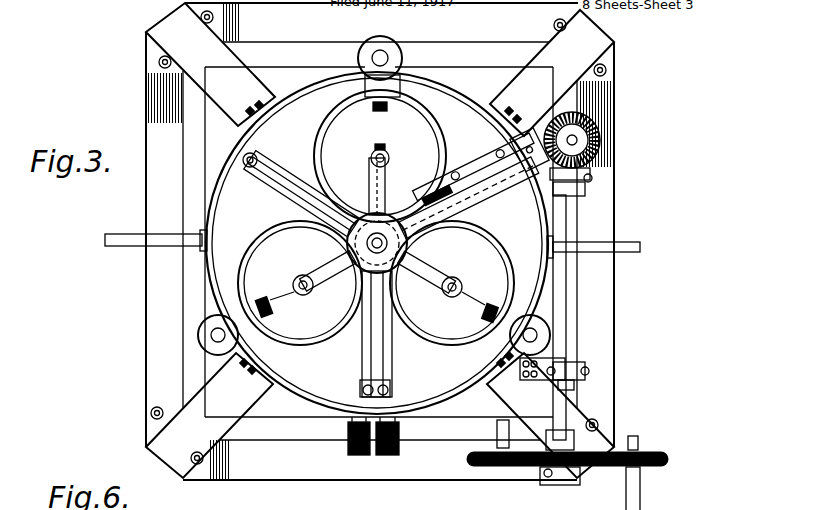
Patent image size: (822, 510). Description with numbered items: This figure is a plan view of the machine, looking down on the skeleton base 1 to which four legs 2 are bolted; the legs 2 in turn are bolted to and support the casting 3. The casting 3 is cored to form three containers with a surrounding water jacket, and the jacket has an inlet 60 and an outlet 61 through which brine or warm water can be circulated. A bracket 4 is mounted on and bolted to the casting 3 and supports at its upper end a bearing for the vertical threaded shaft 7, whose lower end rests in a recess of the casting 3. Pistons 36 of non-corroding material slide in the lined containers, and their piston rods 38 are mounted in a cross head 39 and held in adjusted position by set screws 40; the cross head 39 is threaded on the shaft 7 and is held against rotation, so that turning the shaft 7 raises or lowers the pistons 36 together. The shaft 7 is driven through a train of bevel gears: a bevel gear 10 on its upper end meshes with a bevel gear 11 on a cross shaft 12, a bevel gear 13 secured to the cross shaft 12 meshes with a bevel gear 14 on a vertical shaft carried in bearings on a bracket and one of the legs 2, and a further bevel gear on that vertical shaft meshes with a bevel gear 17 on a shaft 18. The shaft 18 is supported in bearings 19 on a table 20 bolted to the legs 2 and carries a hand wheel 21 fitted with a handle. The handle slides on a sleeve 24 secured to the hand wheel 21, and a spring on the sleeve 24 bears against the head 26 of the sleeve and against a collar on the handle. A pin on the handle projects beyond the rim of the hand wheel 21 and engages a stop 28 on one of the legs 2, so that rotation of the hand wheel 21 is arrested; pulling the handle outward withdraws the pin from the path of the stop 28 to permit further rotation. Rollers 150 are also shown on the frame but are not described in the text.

The base 1 is at (380, 241).
The legs 2 is at (380, 240).
The casting 3 is at (377, 243).
The bracket 4 is at (290, 173).
The vertical threaded shaft 7 is at (378, 242).
The bevel gear 10 is at (358, 268).
The bevel gear 11 is at (412, 238).
The cross shaft 12 is at (497, 180).
The bevel gear 13 is at (533, 126).
The bevel gear 14 is at (600, 150).
The bevel gear 17 is at (592, 170).
The shaft 18 is at (568, 420).
The bearings 19 is at (592, 190).
The table 20 is at (490, 422).
The hand wheel 21 is at (512, 463).
The sleeve 24 is at (659, 488).
The head 26 is at (643, 443).
The stop 28 is at (502, 432).
The pistons 36 is at (376, 217).
The piston rods 38 is at (450, 294).
The cross head 39 is at (350, 280).
The set screws 40 is at (292, 296).
The inlet 60 is at (160, 239).
The outlet 61 is at (612, 250).
The guide roller 150 is at (207, 340).